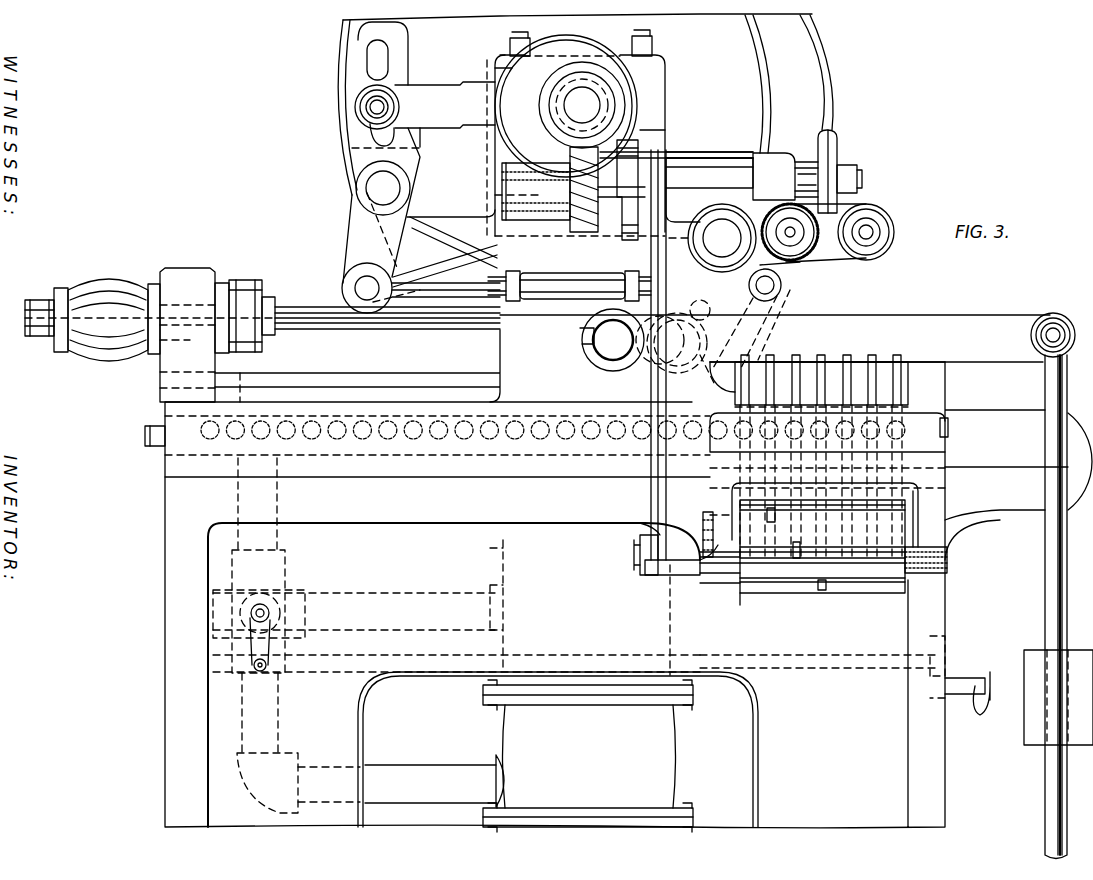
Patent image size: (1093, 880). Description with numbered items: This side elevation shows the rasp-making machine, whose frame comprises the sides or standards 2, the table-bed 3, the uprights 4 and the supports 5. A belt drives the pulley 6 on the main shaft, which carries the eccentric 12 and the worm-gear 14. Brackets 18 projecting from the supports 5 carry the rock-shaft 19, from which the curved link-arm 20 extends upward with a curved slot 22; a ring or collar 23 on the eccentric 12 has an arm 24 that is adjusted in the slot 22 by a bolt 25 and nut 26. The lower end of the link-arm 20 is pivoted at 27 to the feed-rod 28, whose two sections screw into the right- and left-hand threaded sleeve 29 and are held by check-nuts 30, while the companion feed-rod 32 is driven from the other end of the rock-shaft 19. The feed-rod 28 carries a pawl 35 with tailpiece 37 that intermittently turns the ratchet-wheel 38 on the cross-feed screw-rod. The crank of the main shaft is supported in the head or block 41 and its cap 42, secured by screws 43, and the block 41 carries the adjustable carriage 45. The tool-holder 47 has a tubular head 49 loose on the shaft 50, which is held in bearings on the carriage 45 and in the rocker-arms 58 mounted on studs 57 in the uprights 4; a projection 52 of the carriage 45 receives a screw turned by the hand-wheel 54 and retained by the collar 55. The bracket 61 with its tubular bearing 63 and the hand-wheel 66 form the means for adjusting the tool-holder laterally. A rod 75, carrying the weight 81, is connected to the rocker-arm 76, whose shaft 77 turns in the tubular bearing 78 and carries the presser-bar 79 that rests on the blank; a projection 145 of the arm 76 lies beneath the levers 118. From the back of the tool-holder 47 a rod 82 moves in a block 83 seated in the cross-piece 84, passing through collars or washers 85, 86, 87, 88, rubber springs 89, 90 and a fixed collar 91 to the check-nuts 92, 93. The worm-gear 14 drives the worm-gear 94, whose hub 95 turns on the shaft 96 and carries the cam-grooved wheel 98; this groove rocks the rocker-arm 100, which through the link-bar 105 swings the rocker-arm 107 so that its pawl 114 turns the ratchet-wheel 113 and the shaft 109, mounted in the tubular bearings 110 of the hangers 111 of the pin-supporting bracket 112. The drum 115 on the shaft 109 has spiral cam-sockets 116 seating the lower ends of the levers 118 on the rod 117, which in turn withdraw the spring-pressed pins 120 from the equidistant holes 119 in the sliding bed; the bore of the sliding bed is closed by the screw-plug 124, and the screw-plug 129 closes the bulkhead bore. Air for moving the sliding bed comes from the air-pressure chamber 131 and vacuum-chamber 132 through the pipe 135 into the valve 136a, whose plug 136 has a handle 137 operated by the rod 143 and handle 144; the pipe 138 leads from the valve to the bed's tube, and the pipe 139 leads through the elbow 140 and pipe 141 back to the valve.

The sides or standards 2 is at (483, 675).
The table-bed 3 is at (605, 595).
The uprights 4 is at (163, 408).
The supports 5 is at (500, 338).
The pulley 6 is at (818, 100).
The eccentric 12 is at (525, 120).
The worm-gear 14 is at (632, 108).
The brackets 18 is at (451, 190).
The rock-shaft 19 is at (381, 189).
The link-arm 20 is at (350, 236).
The curved slot 22 is at (368, 66).
The ring or collar 23 is at (495, 68).
The arm 24 is at (445, 105).
The bolt or screw 25 is at (376, 107).
The nut 26 is at (345, 100).
The pivot 27 is at (365, 285).
The feed-rod 28 is at (436, 324).
The interiorly-threaded sleeve or tube 29 is at (578, 290).
The check-nuts 30 is at (520, 280).
The feed-rod 32 is at (448, 264).
The pawl 35 is at (788, 262).
The tailpiece 37 is at (805, 246).
The ratchet-wheel 38 is at (801, 232).
The head or block 41 is at (660, 144).
The cap or cover 42 is at (663, 88).
The screws 43 is at (510, 46).
The carriage 45 is at (685, 205).
The tool-holder 47 is at (776, 292).
The tubular head 49 is at (720, 222).
The shaft 50 is at (722, 238).
The projection 52 is at (774, 176).
The hand-wheel 54 is at (828, 160).
The collar 55 is at (688, 168).
The studs 57 is at (695, 368).
The rocker-arms 58 is at (658, 300).
The bracket 61 is at (858, 212).
The tubular bearing 63 is at (862, 235).
The hand-wheel 66 is at (884, 222).
The rod 75 is at (1069, 607).
The rocker-arm 76 is at (940, 324).
The shaft 77 is at (608, 362).
The tubular bearing 78 is at (593, 358).
The presser-bar 79 is at (582, 336).
The weight 81 is at (1077, 660).
The rod 82 is at (300, 367).
The block 83 is at (185, 340).
The cross-piece 84 is at (180, 270).
The collar or washer 85 is at (60, 352).
The collar or washer 86 is at (155, 280).
The collar or washer 87 is at (228, 283).
The collar or washer 88 is at (262, 346).
The rubber block or spring 89 is at (100, 356).
The rubber block or spring 90 is at (244, 284).
The fixed collar 91 is at (276, 330).
The check-nut 92 is at (32, 336).
The check-nut 93 is at (46, 300).
The worm-gear 94 is at (585, 234).
The hub 95 is at (562, 180).
The shaft 96 is at (495, 196).
The wheel 98 is at (630, 168).
The rocker-arm 100 is at (690, 196).
The link-bar 105 is at (652, 388).
The rocker-arm 107 is at (664, 576).
The shaft 109 is at (947, 556).
The tubular bearings 110 is at (948, 509).
The hangers 111 is at (920, 482).
The pin-supporting bracket 112 is at (928, 440).
The ratchet-wheel 113 is at (698, 578).
The pawl 114 is at (660, 524).
The drum or cylinder 115 is at (905, 590).
The cam-sockets 116 is at (820, 592).
The rod 117 is at (920, 496).
The levers 118 is at (905, 378).
The holes 119 is at (492, 445).
The pins 120 is at (910, 412).
The screw-plug 124 is at (948, 425).
The screw-plug 129 is at (145, 437).
The air-pressure chamber 131 is at (505, 558).
The vacuum-chamber 132 is at (510, 742).
The pipe 135 is at (366, 598).
The valve stem or plug 136 is at (253, 613).
The valve 136a is at (285, 590).
The handle 137 is at (258, 640).
The pipe 138 is at (275, 548).
The pipe 139 is at (465, 796).
The elbow 140 is at (290, 762).
The pipe 141 is at (275, 718).
The rod 143 is at (866, 660).
The handle 144 is at (982, 692).
The projection 145 is at (905, 365).